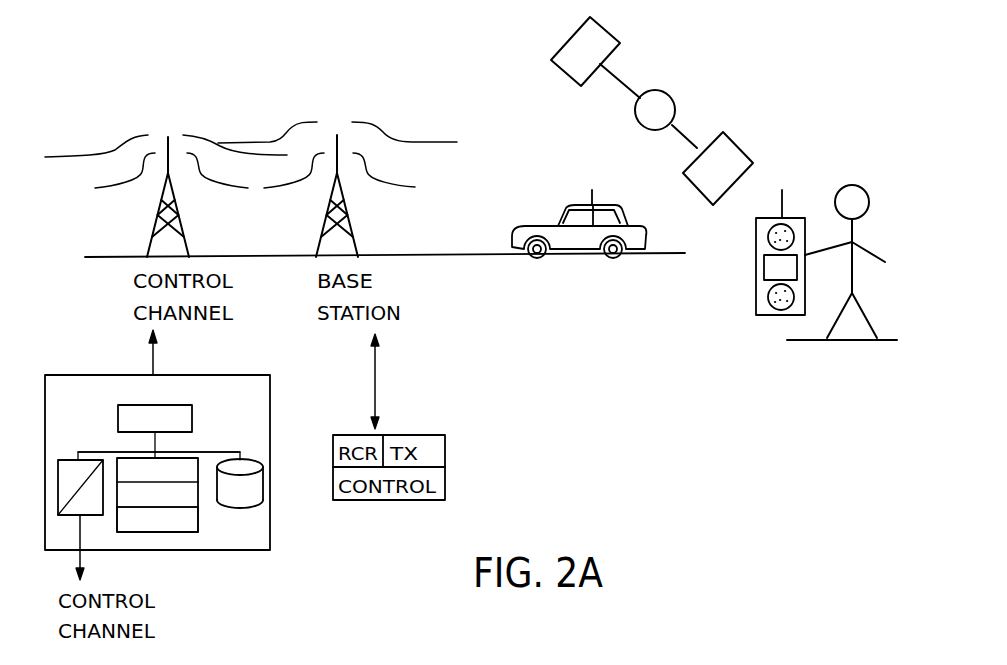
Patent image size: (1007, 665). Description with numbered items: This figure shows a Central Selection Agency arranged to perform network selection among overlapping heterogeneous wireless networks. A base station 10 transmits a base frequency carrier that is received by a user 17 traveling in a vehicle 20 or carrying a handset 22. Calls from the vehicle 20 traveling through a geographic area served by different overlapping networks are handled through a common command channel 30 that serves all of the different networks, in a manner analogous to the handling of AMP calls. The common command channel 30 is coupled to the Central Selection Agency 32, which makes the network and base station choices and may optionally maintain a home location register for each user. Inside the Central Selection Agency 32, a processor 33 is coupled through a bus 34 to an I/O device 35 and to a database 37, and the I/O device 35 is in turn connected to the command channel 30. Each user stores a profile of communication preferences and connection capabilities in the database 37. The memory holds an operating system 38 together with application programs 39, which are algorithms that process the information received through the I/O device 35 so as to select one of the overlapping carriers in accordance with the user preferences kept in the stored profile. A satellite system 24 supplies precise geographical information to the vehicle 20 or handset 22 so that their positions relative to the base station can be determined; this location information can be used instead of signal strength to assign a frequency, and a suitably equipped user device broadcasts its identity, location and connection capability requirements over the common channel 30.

The base station 10 is at (364, 233).
The user 17 is at (853, 275).
The vehicle 20 is at (577, 262).
The handset 22 is at (753, 315).
The satellite system 24 is at (674, 104).
The common command channel 30 is at (195, 233).
The Central Selection Agency 32 is at (211, 367).
The processor 33 is at (192, 415).
The bus 34 is at (213, 452).
The I/O device 35 is at (60, 461).
The database 37 is at (230, 497).
The operating system 38 is at (117, 473).
The application programs 39 is at (117, 517).